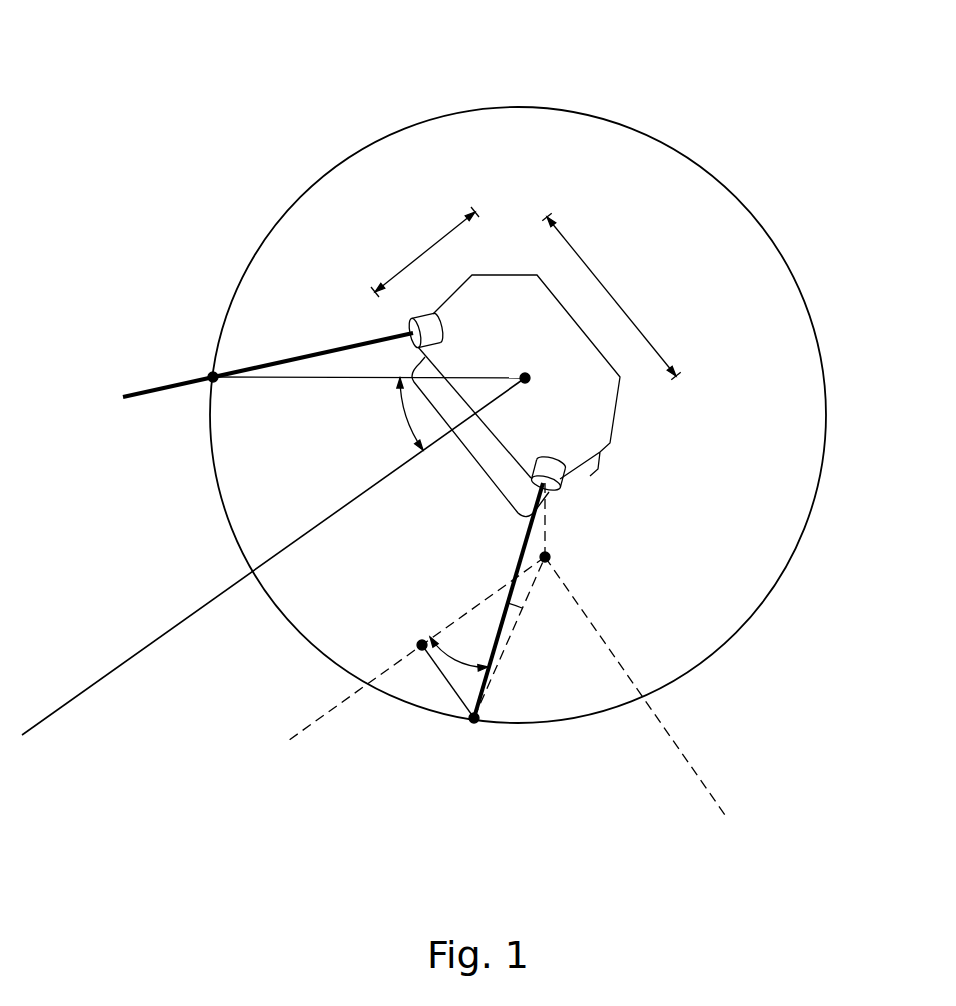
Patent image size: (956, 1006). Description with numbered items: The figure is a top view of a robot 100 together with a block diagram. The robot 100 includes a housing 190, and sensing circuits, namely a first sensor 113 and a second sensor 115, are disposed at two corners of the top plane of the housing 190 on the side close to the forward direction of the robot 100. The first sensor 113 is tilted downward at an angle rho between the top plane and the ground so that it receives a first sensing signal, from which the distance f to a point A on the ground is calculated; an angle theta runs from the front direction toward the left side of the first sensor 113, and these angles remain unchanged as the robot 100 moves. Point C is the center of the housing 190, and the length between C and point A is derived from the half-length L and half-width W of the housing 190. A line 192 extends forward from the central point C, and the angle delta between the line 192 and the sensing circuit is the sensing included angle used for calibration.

The robot 100 is at (218, 40).
The first sensor 113 is at (557, 475).
The second sensor 115 is at (417, 320).
The housing 190 is at (593, 433).
The line 192 is at (195, 613).